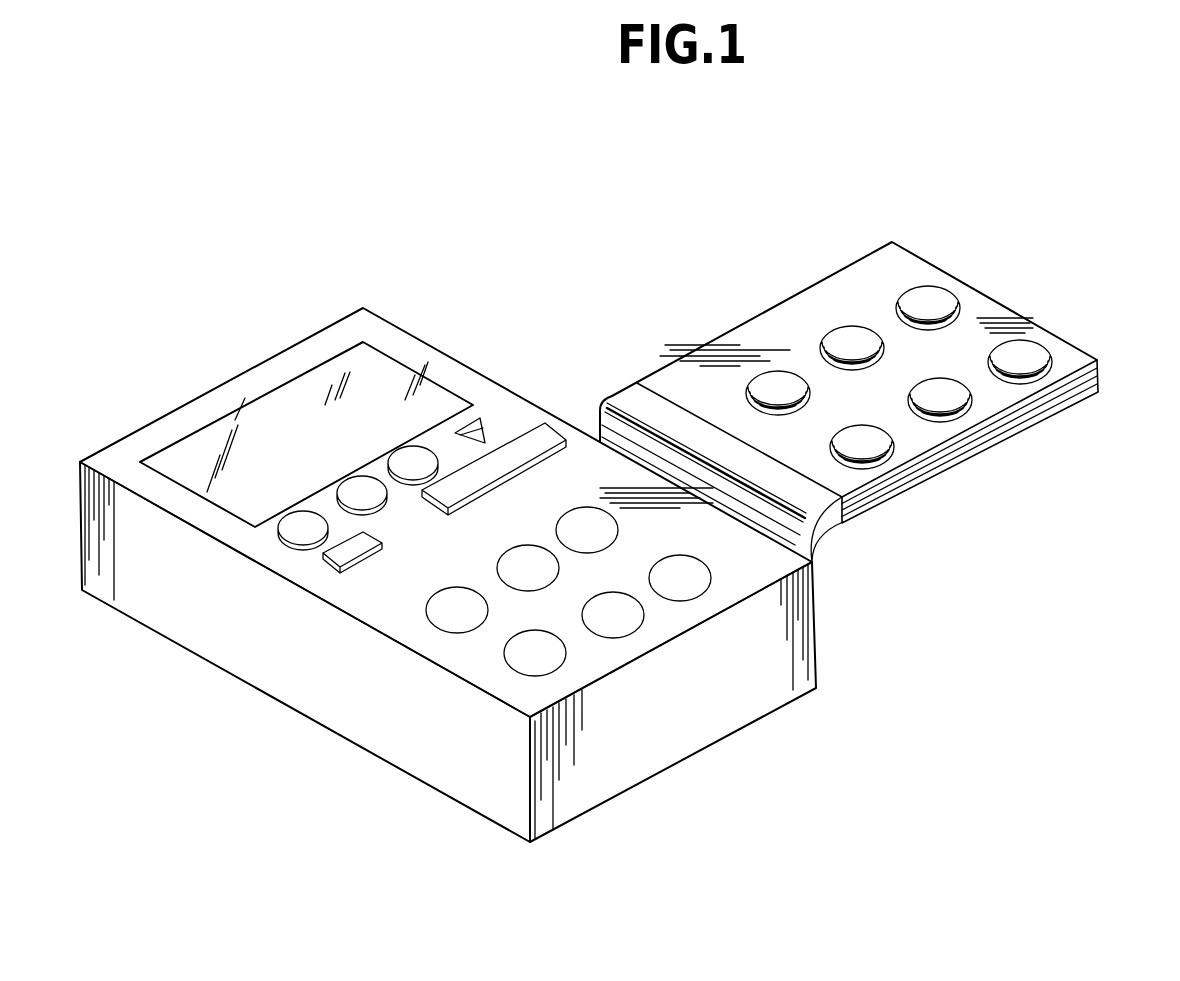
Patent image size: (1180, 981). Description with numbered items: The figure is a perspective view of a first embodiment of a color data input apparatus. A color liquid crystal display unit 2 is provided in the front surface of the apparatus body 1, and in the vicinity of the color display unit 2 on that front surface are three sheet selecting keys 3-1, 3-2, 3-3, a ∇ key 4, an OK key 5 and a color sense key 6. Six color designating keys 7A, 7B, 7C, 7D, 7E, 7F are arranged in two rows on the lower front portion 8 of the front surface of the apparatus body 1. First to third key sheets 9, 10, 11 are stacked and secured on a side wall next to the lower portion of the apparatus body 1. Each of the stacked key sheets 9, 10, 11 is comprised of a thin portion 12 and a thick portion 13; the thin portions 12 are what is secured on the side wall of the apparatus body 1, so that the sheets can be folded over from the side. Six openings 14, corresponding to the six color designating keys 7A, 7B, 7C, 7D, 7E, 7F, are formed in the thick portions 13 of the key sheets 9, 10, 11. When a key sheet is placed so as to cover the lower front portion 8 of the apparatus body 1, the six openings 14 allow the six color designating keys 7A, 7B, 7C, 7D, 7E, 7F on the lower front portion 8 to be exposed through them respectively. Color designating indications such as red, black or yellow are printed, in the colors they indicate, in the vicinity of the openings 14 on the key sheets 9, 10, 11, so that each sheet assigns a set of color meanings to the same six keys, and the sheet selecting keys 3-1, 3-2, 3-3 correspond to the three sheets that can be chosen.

The apparatus body 1 is at (383, 290).
The color liquid crystal display unit 2 is at (373, 377).
The sheet selecting key 3-1 is at (297, 537).
The sheet selecting key 3-2 is at (362, 478).
The sheet selecting key 3-3 is at (425, 453).
The ∇ key 4 is at (482, 417).
The OK key 5 is at (327, 565).
The color sense key 6 is at (537, 423).
The color designating key 7A is at (433, 623).
The color designating key 7B is at (513, 583).
The color designating key 7C is at (593, 512).
The color designating key 7D is at (525, 672).
The color designating key 7E is at (637, 622).
The color designating key 7F is at (707, 588).
The lower portion 8 is at (582, 643).
The first key sheet 9 is at (826, 312).
The second key sheet 10 is at (1100, 372).
The third key sheet 11 is at (993, 433).
The thin portion 12 is at (836, 518).
The thick portion 13 is at (755, 332).
The openings 14 is at (777, 405).